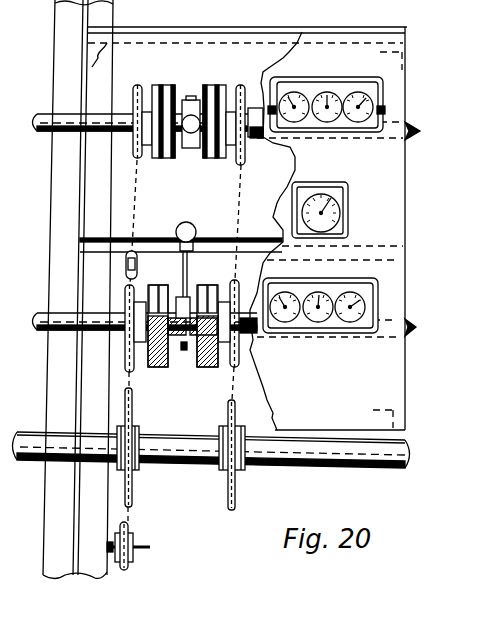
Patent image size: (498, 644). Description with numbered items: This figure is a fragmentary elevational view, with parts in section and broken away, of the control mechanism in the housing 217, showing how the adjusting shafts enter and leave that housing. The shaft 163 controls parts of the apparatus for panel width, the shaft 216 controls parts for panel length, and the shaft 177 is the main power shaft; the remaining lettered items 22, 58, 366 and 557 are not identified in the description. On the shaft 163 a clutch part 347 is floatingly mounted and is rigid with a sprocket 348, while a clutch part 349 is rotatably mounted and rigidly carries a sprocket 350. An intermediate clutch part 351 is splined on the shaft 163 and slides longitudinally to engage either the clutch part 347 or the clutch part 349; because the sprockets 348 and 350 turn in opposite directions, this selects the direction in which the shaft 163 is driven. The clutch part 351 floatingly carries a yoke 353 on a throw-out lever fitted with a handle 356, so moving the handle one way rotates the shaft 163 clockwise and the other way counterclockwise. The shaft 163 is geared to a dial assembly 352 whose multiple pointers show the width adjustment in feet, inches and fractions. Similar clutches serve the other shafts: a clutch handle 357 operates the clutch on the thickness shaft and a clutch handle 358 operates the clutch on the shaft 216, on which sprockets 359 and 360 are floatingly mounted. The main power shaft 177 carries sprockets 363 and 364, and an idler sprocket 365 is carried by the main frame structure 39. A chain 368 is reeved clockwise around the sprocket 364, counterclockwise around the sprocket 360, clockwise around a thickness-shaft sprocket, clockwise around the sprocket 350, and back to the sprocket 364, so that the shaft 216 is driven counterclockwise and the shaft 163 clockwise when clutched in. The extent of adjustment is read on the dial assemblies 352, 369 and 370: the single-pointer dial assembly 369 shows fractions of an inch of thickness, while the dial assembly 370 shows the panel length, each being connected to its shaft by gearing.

The connector 22 is at (328, 104).
The main frame structure 39 is at (53, 527).
The member 58 is at (9, 292).
The shaft 163 is at (40, 113).
The main power shaft 177 is at (323, 455).
The shaft 216 is at (36, 333).
The housing 217 is at (302, 168).
The clutch part 347 is at (150, 103).
The sprocket 348 is at (133, 85).
The clutch part 349 is at (230, 85).
The sprocket 350 is at (263, 92).
The intermediate clutch part 351 is at (177, 92).
The dial assembly 352 is at (360, 92).
The yoke 353 is at (198, 160).
The handle 356 is at (187, 150).
The clutch handle 357 is at (207, 220).
The clutch handle 358 is at (188, 300).
The sprocket 359 is at (127, 300).
The sprocket 360 is at (267, 272).
The sprocket 363 is at (131, 485).
The sprocket 364 is at (237, 492).
The idler sprocket 365 is at (130, 565).
The chain 366 is at (133, 207).
The chain 368 is at (260, 211).
The dial assembly 369 is at (342, 193).
The dial assembly 370 is at (363, 293).
The member 557 is at (12, 194).